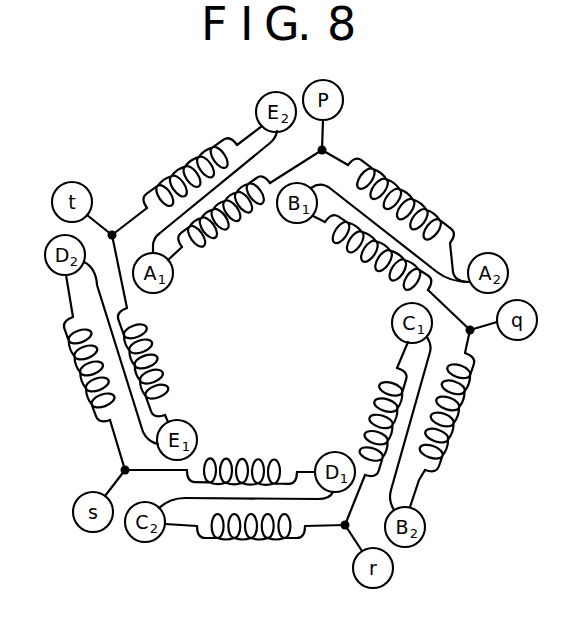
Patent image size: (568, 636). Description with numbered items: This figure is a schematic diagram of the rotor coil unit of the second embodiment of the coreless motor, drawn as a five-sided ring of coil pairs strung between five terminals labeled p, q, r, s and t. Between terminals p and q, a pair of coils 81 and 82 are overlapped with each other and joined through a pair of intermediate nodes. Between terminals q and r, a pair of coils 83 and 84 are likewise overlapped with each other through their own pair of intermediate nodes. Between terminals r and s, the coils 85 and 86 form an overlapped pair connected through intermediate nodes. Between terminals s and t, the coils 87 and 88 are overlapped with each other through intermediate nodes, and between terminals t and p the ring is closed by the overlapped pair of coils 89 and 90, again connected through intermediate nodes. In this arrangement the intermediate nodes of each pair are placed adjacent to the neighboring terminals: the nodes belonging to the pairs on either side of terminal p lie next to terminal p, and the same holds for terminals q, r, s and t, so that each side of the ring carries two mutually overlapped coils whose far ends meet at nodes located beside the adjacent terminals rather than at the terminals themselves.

The coil 81 is at (409, 192).
The coil 82 is at (437, 270).
The coil 83 is at (454, 434).
The coil 84 is at (418, 486).
The coil 85 is at (264, 543).
The coil 86 is at (200, 485).
The coil 87 is at (147, 410).
The coil 88 is at (73, 364).
The coil 89 is at (260, 177).
The coil 90 is at (177, 168).